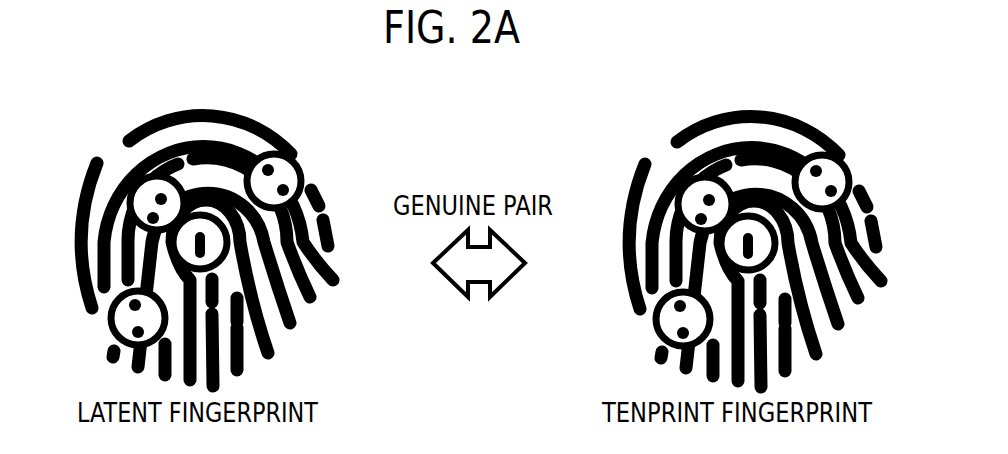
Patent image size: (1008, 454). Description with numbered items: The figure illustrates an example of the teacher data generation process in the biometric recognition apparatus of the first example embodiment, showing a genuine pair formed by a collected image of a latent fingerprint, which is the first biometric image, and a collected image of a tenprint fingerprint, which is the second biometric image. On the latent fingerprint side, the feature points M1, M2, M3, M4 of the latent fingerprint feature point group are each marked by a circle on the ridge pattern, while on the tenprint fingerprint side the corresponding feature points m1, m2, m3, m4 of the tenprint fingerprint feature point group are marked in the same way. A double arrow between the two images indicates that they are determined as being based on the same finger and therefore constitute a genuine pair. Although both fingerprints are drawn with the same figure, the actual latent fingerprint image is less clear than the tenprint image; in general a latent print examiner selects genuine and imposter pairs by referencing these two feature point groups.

The feature point of the latent fingerprint M1 is at (221, 268).
The feature point of the latent fingerprint M2 is at (111, 307).
The feature point of the latent fingerprint M3 is at (290, 151).
The feature point of the latent fingerprint M4 is at (148, 179).
The feature point of the tenprint fingerprint m1 is at (766, 270).
The feature point of the tenprint fingerprint m2 is at (657, 307).
The feature point of the tenprint fingerprint m3 is at (837, 152).
The feature point of the tenprint fingerprint m4 is at (696, 180).